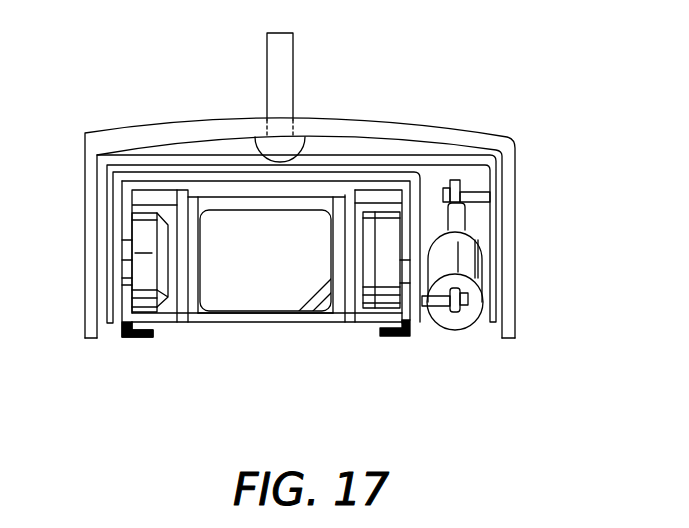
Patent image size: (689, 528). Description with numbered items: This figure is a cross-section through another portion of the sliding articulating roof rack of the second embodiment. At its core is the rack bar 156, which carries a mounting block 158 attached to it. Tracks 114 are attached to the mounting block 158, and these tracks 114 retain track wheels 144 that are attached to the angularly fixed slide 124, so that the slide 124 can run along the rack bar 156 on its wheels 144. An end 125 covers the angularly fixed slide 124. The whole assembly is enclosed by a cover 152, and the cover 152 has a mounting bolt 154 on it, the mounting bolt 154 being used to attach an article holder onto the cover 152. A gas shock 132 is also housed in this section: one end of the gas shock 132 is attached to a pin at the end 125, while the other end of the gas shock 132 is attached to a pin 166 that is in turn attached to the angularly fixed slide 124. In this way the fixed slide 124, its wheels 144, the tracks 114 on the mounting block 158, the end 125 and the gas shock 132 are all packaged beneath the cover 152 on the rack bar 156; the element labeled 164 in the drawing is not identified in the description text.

The track 114 is at (172, 320).
The angularly fixed slide 124 is at (400, 333).
The end 125 is at (488, 320).
The gas shock 132 is at (460, 330).
The track wheels 144 is at (145, 283).
The cover 152 is at (438, 133).
The mounting bolt 154 is at (288, 62).
The rack bar 156 is at (237, 300).
The mounting block 158 is at (263, 317).
The stop arm 164 is at (480, 192).
The pin 166 is at (433, 330).